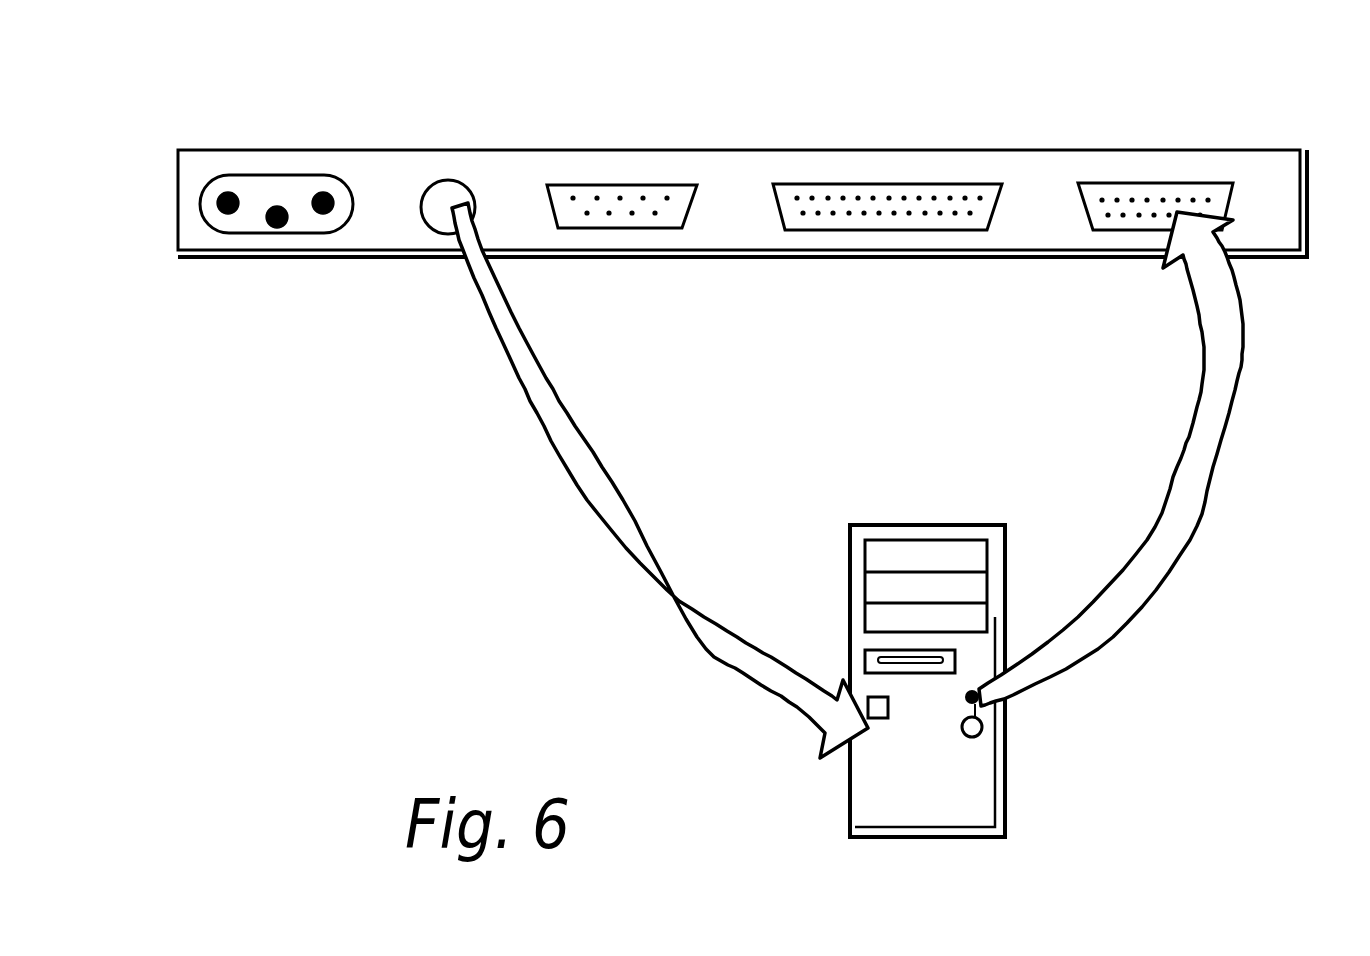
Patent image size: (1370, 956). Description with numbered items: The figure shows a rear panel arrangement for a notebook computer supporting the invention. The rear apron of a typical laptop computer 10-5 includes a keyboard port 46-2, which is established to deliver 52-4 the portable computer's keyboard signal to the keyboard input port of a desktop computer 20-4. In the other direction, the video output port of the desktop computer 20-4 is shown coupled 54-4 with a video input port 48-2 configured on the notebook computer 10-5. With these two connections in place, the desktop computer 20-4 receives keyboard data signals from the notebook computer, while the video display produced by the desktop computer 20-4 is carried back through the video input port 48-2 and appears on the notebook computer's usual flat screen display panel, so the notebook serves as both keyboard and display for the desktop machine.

The laptop computer 10-5 is at (743, 146).
The keyboard port 46-2 is at (478, 175).
The video input port 48-2 is at (1096, 169).
The keyboard signal delivery 52-4 is at (584, 414).
The video coupling 54-4 is at (1250, 307).
The desktop computer 20-4 is at (915, 517).